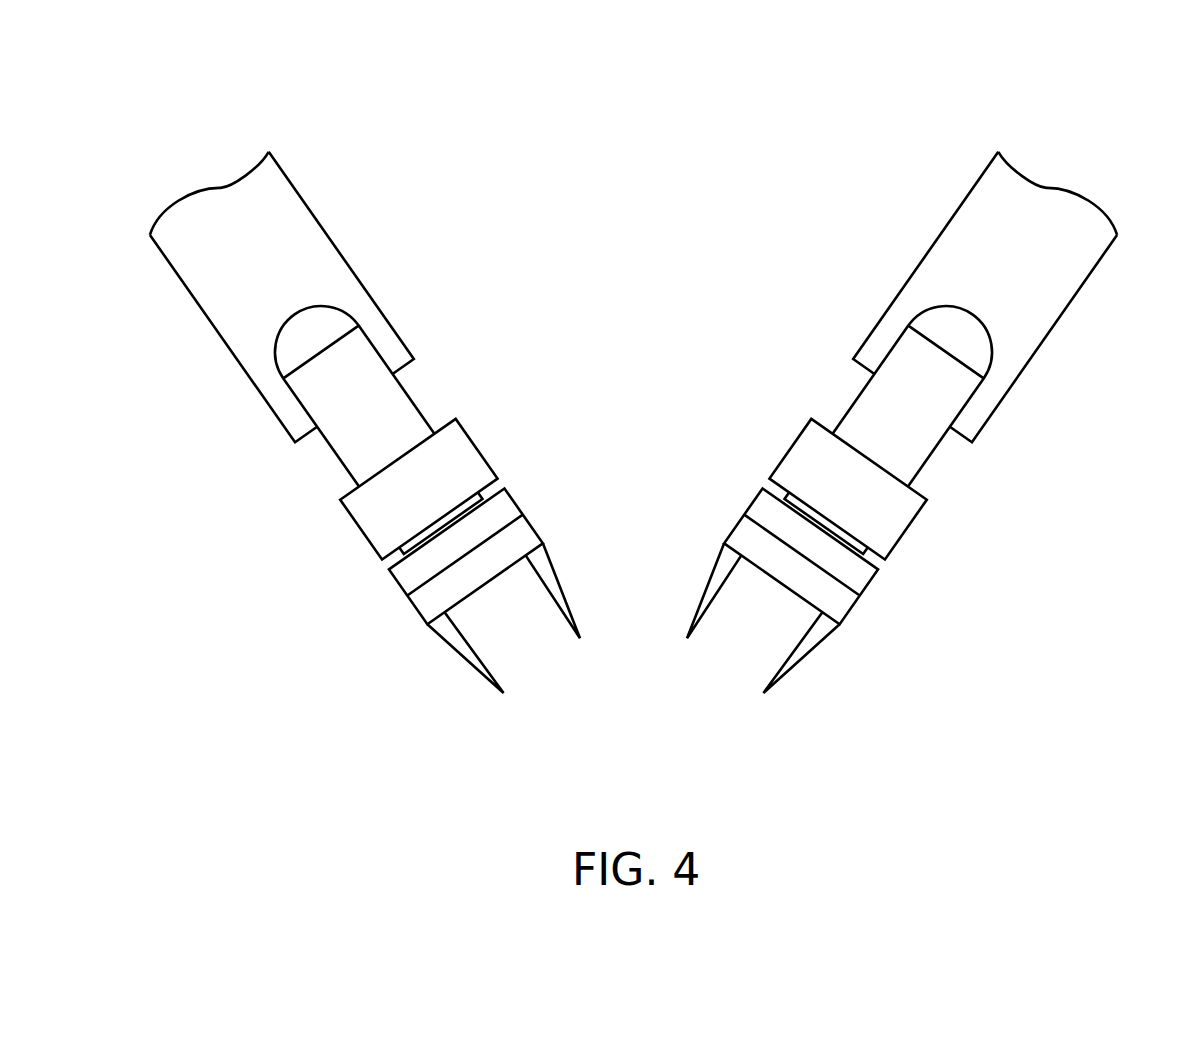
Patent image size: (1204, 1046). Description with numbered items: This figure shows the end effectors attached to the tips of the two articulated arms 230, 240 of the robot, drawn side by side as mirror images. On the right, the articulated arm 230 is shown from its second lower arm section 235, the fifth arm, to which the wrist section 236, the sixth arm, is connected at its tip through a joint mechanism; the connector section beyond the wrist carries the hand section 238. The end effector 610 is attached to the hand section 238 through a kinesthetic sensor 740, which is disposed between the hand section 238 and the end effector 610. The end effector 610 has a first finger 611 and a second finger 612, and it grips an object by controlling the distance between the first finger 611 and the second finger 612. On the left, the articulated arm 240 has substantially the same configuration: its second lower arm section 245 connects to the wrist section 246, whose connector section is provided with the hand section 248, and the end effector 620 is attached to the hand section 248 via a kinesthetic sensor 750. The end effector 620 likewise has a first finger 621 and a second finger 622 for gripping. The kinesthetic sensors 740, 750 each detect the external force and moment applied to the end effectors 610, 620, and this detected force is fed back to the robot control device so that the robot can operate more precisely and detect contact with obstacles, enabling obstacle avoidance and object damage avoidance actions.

The articulated arm 240 is at (338, 128).
The second lower arm section 245 is at (308, 248).
The wrist section 246 is at (352, 438).
The hand section 248 is at (425, 532).
The kinesthetic sensor 750 is at (413, 571).
The end effector 620 is at (418, 627).
The first finger 621 is at (553, 585).
The second finger 622 is at (463, 647).
The articulated arm 230 is at (929, 128).
The second lower arm section 235 is at (1050, 287).
The wrist section 236 is at (865, 415).
The hand section 238 is at (848, 530).
The kinesthetic sensor 740 is at (854, 571).
The end effector 610 is at (849, 627).
The first finger 611 is at (714, 585).
The second finger 612 is at (804, 647).